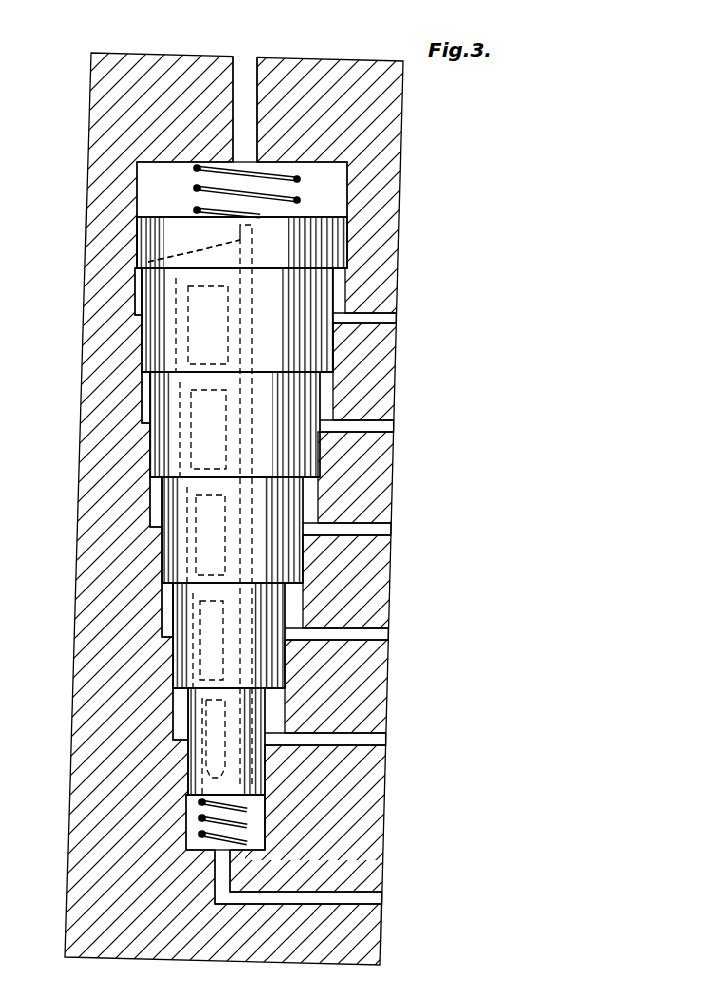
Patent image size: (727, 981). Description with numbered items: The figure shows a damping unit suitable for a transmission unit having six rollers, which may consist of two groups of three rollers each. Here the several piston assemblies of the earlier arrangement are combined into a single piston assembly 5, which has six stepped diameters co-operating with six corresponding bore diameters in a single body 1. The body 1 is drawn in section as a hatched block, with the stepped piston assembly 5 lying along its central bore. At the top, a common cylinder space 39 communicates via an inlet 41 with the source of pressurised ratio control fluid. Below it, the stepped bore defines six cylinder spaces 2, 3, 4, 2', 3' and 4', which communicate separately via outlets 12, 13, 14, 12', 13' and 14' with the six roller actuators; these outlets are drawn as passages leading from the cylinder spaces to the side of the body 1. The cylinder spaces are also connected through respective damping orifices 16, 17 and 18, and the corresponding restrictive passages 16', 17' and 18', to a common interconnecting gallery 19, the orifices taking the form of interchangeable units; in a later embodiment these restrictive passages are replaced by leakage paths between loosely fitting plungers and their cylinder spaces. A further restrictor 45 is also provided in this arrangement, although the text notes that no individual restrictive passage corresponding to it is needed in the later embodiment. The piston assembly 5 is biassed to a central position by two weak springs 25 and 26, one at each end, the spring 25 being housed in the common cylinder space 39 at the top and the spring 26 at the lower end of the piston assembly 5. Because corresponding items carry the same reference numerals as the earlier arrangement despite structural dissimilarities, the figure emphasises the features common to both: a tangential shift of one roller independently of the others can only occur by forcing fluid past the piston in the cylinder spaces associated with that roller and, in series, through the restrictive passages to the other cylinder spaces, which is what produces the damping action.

The body 1 is at (384, 120).
The inlet 41 is at (245, 26).
The common cylinder space 39 is at (150, 188).
The weak spring 25 is at (300, 200).
The piston assembly 5 is at (340, 245).
The restrictor 45 is at (148, 259).
The cylinder space 2 is at (284, 320).
The outlet 12 is at (389, 325).
The damping orifice 16 is at (88, 299).
The common interconnecting gallery 19 is at (240, 324).
The damping orifice 17 is at (95, 398).
The cylinder space 3 is at (289, 424).
The outlet 13 is at (379, 432).
The damping orifice 18 is at (101, 505).
The cylinder space 4 is at (291, 530).
The outlet 14 is at (369, 533).
The restrictive passage 16' is at (104, 610).
The cylinder space 2' is at (299, 635).
The outlet 12' is at (359, 640).
The restrictive passage 17' is at (111, 714).
The cylinder space 3' is at (303, 741).
The outlet 13' is at (348, 745).
The restrictive passage 18' is at (148, 798).
The weak spring 26 is at (188, 826).
The cylinder space 4' is at (340, 822).
The outlet 14' is at (322, 883).